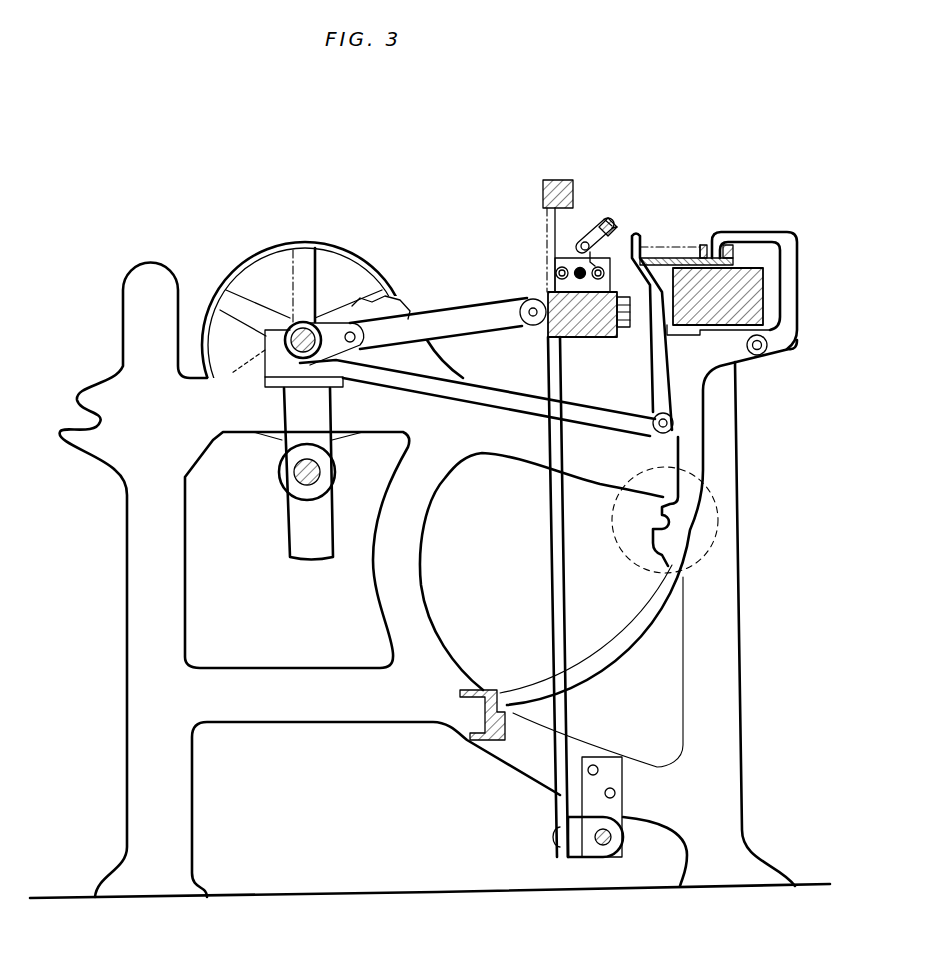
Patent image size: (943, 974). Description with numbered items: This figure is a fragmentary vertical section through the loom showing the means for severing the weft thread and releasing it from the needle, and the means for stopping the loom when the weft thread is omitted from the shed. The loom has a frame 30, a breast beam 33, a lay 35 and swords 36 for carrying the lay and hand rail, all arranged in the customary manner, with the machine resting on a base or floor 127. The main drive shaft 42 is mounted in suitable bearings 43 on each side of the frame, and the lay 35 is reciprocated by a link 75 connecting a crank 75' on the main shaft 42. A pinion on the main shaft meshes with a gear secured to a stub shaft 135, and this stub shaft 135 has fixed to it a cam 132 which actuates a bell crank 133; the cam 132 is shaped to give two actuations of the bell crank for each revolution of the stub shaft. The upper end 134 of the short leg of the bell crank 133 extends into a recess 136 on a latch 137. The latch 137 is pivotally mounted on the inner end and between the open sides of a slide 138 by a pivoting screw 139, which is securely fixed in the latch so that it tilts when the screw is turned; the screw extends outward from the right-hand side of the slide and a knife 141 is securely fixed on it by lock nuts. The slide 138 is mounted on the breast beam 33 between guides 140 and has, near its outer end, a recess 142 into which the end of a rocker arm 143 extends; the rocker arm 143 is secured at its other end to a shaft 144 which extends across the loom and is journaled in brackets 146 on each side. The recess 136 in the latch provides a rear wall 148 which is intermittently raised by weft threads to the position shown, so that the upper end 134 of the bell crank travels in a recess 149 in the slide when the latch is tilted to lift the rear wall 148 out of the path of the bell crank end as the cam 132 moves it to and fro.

The frame 30 is at (733, 590).
The base of the machine or floor 127 is at (392, 896).
The brackets 146 is at (608, 663).
The main drive shaft 42 is at (314, 322).
The bearings 43 is at (276, 346).
The crank 75' is at (398, 286).
The link 75 is at (448, 312).
The bell crank 133 is at (475, 383).
The cam 132 is at (295, 543).
The stub shaft 135 is at (297, 473).
The swords 36 is at (563, 600).
The lay 35 is at (595, 337).
The knife 141 is at (555, 265).
The pivoting screw 139 is at (580, 252).
The rear wall 148 is at (600, 228).
The recess 136 is at (602, 217).
The latch 137 is at (614, 222).
The slide 138 is at (641, 236).
The upper end of the short leg of the bell crank 134 is at (640, 247).
The breast beam 33 is at (750, 293).
The guides 140 is at (728, 265).
The recess 142 is at (745, 232).
The recess 149 is at (690, 253).
The rocker arm 143 is at (798, 244).
The shaft 144 is at (773, 363).